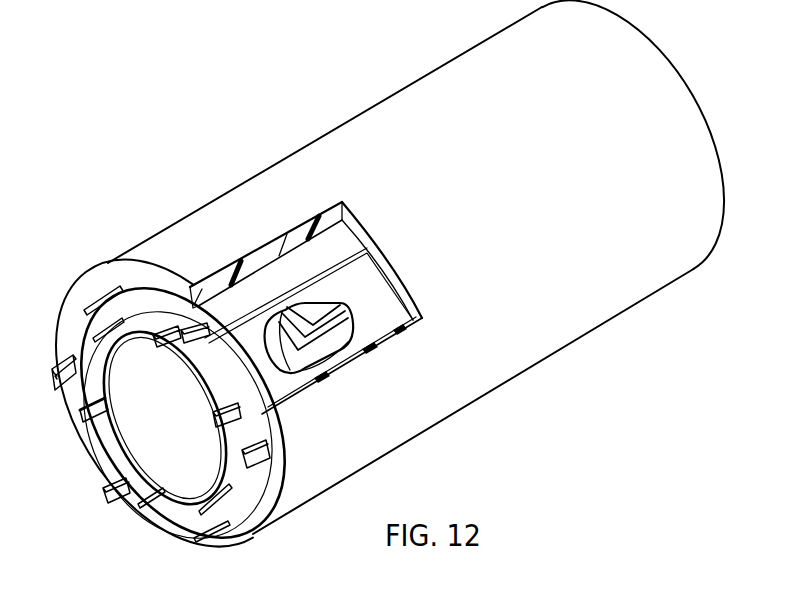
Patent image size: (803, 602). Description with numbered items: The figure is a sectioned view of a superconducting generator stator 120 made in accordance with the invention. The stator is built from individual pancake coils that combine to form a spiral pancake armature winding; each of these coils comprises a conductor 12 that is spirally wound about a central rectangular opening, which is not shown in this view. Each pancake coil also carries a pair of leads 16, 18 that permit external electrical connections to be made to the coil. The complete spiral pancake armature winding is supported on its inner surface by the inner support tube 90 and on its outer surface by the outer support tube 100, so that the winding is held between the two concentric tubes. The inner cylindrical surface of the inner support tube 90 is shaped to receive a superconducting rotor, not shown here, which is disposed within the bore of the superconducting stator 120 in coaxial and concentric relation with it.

The conductor 12 is at (346, 316).
The lead 16 is at (158, 344).
The lead 18 is at (91, 308).
The inner support tube 90 is at (131, 452).
The outer support tube 100 is at (159, 528).
The superconducting stator 120 is at (529, 436).